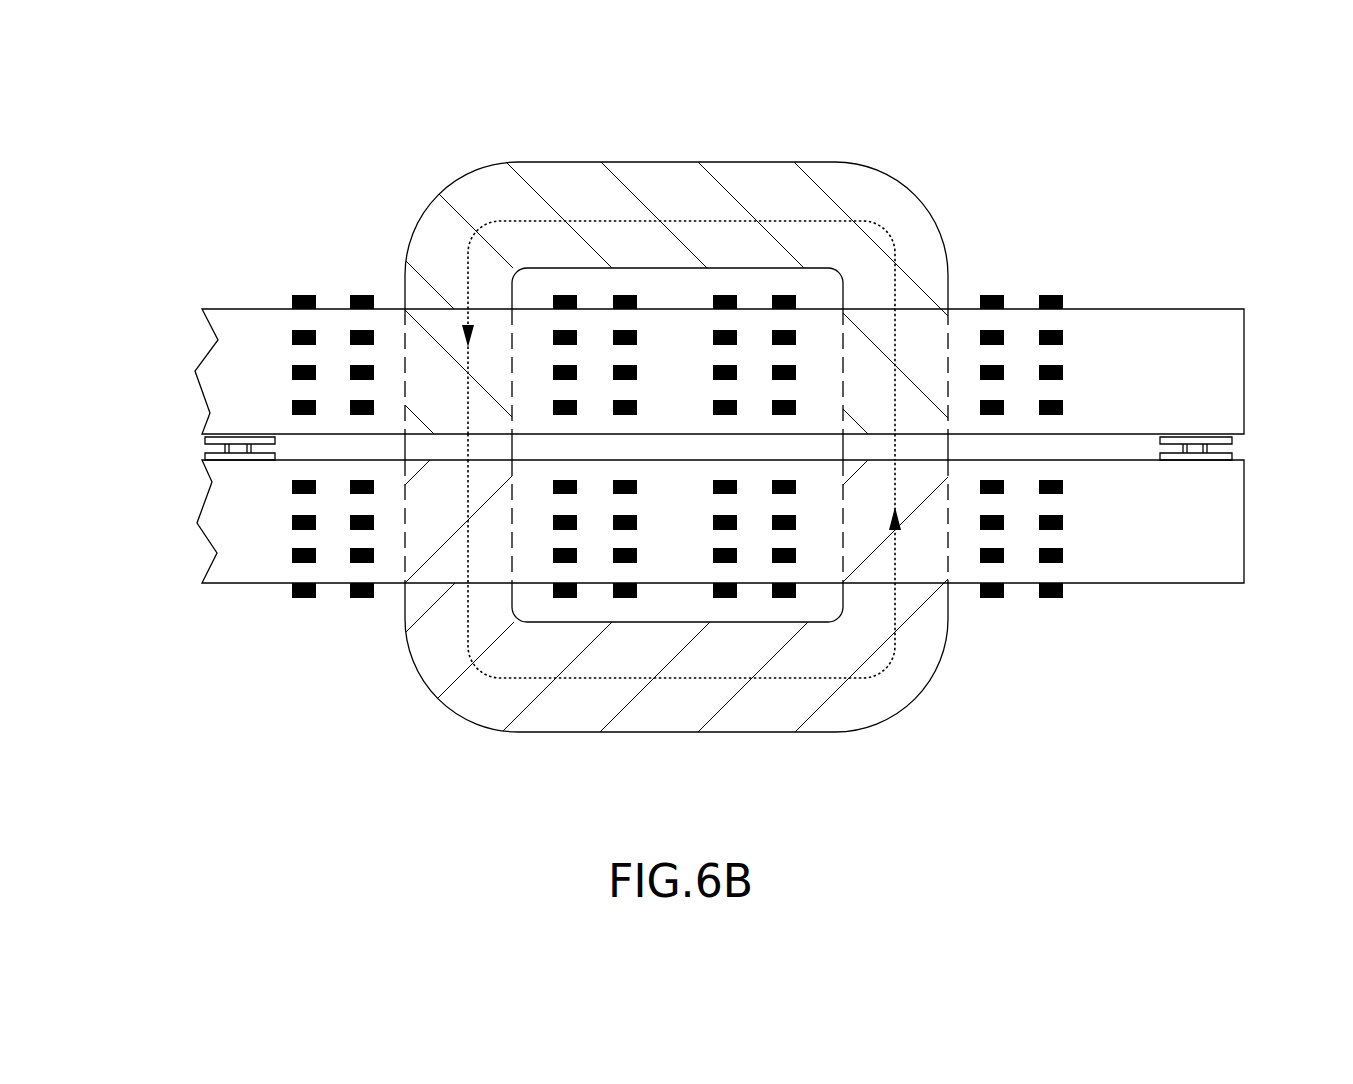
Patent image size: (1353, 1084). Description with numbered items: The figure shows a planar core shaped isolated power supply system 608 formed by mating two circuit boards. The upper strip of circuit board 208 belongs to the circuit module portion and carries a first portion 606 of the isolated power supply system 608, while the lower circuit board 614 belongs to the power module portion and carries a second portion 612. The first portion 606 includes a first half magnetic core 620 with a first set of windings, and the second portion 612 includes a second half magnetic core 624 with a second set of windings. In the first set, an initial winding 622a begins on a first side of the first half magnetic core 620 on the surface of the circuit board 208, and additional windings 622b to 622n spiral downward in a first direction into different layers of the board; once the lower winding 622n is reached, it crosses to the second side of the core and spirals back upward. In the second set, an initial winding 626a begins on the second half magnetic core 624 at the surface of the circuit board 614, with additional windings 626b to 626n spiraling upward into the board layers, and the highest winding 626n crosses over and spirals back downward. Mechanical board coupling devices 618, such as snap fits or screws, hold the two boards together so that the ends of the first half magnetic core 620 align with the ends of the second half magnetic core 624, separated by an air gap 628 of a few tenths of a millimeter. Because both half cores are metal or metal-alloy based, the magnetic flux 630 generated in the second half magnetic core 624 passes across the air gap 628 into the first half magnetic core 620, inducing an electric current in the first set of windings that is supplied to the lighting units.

The circuit board 208 is at (1198, 348).
The first portion of the isolated power supply system 606 is at (980, 193).
The isolated power supply system 608 is at (190, 162).
The second portion of the isolated power supply system 612 is at (1012, 750).
The circuit board 614 is at (1213, 527).
The mechanical board coupling devices 618 is at (217, 441).
The first half magnetic core 620 is at (475, 208).
The initial winding 622a is at (292, 300).
The additional winding 622b is at (292, 335).
The lower winding 622n is at (292, 405).
The second half magnetic core 624 is at (483, 695).
The initial winding 626a is at (292, 595).
The additional winding 626b is at (292, 562).
The highest winding 626n is at (292, 484).
The air gap 628 is at (902, 443).
The magnetic flux 630 is at (548, 220).